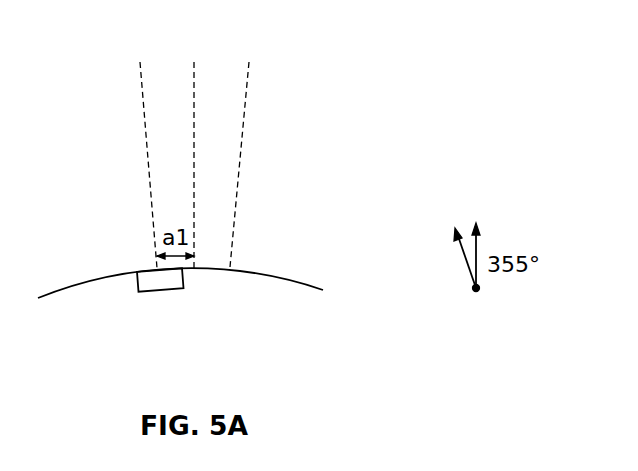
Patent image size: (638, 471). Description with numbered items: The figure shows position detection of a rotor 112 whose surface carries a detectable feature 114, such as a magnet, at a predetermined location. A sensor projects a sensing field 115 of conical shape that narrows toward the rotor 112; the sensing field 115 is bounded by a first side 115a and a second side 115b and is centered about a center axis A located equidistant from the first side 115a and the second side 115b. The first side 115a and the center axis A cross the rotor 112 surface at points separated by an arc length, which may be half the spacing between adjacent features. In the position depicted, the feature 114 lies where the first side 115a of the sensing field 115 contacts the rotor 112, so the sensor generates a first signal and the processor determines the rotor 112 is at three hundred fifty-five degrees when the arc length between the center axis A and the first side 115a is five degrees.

The rotor 112 is at (302, 283).
The feature 114 is at (158, 293).
The sensing field 115 is at (278, 182).
The first side 115a is at (142, 97).
The second side 115b is at (245, 107).
The center axis A is at (194, 103).